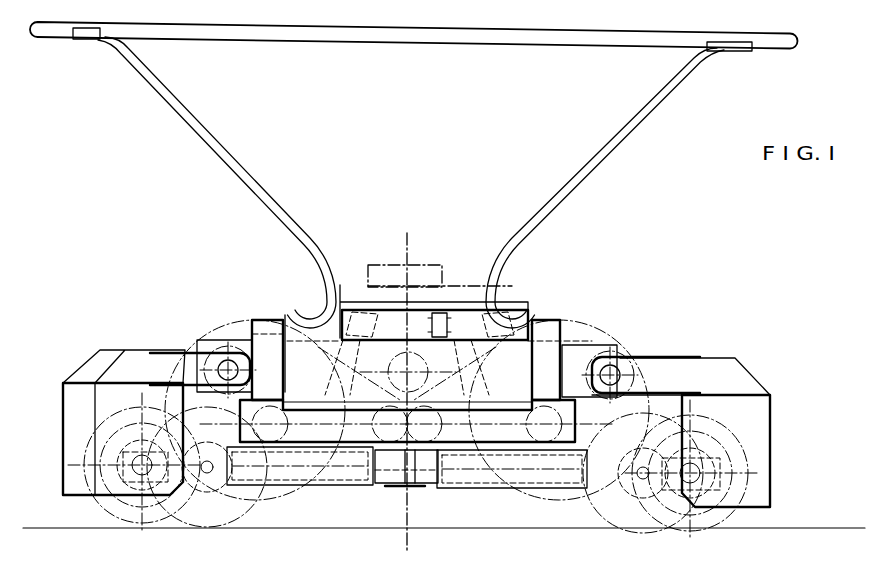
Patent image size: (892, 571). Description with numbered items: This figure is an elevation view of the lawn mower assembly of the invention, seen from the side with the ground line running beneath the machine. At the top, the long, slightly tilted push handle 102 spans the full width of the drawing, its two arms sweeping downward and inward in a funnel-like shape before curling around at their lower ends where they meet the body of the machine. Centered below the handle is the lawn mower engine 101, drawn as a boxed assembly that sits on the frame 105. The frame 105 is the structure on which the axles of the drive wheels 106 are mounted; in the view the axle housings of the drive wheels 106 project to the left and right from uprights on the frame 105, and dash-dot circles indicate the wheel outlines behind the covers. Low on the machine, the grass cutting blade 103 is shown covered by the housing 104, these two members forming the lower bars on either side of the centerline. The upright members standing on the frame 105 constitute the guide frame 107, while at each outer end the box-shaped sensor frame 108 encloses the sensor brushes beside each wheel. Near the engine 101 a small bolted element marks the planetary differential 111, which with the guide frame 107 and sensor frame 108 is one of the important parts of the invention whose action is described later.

The lawn mower engine 101 is at (377, 265).
The push handle 102 is at (180, 113).
The grass cutting blade 103 is at (575, 486).
The housing 104 is at (270, 485).
The frame 105 is at (313, 484).
The drive wheels 106 is at (212, 338).
The guide frame 107 is at (572, 340).
The sensor frame 108 is at (92, 362).
The planetary differential 111 is at (447, 312).